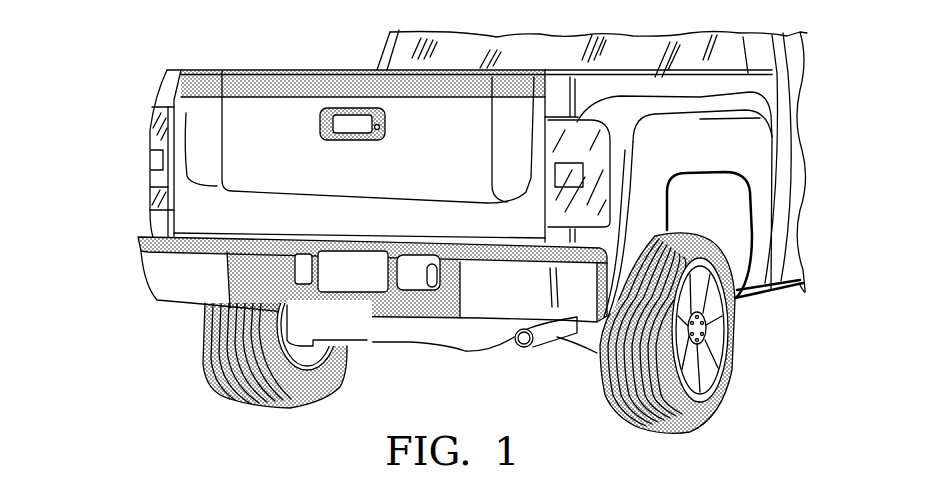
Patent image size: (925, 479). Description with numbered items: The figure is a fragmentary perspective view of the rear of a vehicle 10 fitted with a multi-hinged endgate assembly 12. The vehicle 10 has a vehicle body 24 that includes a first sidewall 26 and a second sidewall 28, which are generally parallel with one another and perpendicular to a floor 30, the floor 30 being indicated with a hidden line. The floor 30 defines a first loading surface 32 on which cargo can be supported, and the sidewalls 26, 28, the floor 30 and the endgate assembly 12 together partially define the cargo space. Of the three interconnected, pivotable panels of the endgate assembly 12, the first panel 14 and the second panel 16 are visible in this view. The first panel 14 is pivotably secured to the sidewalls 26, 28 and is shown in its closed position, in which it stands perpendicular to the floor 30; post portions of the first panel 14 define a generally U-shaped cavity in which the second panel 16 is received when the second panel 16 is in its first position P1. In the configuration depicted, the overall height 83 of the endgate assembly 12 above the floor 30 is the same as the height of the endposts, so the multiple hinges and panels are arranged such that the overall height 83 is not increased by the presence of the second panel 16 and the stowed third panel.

The vehicle 10 is at (109, 96).
The endgate assembly 12 is at (141, 221).
The first panel 14 is at (235, 213).
The second panel 16 is at (248, 123).
The vehicle body 24 is at (740, 142).
The first sidewall 26 is at (167, 85).
The second sidewall 28 is at (668, 84).
The floor 30 is at (540, 252).
The first loading surface 32 is at (617, 240).
The overall height 83 is at (465, 73).
The first position P1 is at (294, 117).